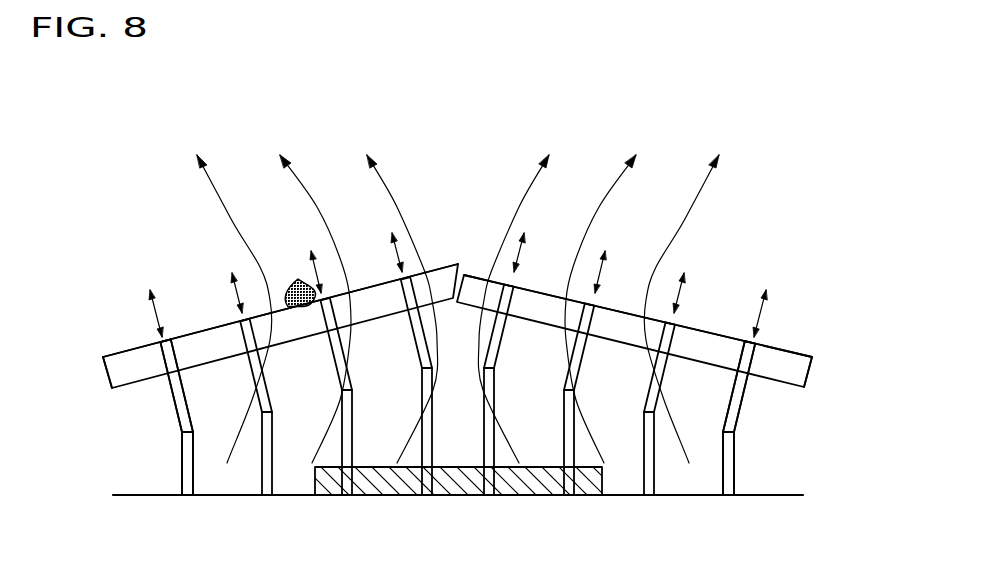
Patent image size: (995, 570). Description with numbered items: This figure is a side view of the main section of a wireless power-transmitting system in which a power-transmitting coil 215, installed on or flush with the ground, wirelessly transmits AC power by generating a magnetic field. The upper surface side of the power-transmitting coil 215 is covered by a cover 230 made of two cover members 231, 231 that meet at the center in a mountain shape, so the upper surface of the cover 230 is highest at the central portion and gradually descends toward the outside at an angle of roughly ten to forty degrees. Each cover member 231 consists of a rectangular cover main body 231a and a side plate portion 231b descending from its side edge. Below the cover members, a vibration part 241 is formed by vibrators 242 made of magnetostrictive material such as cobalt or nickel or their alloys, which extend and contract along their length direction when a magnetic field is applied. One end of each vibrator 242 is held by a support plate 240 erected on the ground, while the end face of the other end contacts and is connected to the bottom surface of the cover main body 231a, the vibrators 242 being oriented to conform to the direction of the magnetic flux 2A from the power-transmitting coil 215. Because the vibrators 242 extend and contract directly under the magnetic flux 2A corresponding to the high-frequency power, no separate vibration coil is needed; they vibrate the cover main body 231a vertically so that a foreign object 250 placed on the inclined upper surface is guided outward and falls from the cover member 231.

The magnetic flux 2A is at (320, 207).
The power-transmitting coil 215 is at (487, 484).
The cover 230 is at (550, 262).
The cover member 231 is at (368, 288).
The cover main body 231a is at (190, 333).
The side plate portion 231b is at (106, 375).
The support plate 240 is at (761, 472).
The vibration part 241 is at (172, 413).
The vibrator 242 is at (770, 403).
The foreign object 250 is at (288, 280).